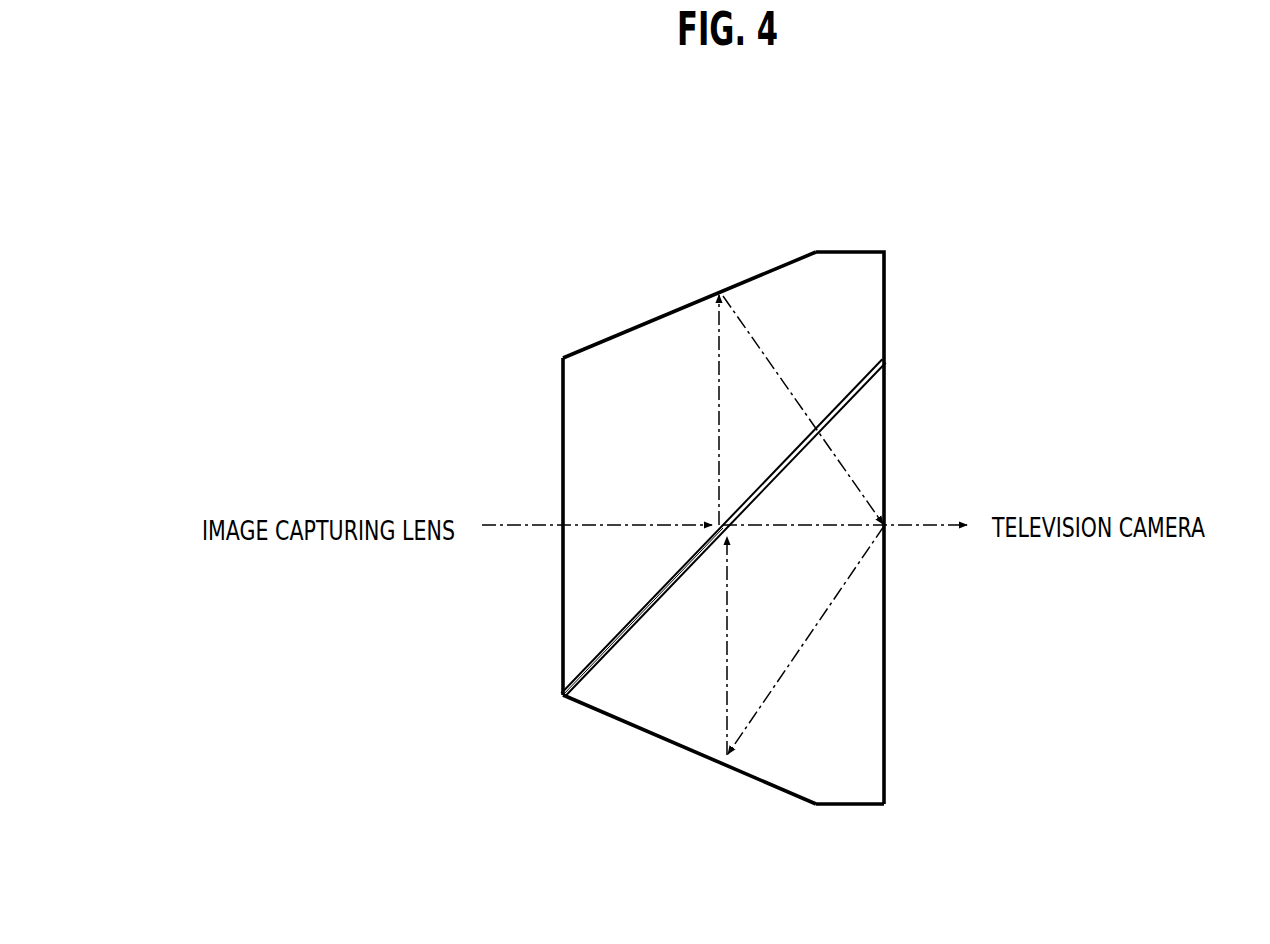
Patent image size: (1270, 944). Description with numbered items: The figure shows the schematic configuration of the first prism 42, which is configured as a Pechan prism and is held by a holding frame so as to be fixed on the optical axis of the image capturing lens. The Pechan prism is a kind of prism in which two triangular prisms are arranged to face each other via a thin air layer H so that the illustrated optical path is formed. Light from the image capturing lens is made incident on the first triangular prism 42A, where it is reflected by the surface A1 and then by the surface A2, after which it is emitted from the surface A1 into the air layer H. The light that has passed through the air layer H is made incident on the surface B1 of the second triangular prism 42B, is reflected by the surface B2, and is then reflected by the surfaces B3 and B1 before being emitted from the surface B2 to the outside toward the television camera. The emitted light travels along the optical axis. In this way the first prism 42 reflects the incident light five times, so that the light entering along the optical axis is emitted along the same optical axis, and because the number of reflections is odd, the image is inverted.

The first prism 42 is at (734, 529).
The first triangular prism 42A is at (723, 440).
The second triangular prism 42B is at (723, 616).
The air layer H is at (756, 525).
The surface A1 is at (603, 640).
The surface A2 is at (658, 322).
The surface B1 is at (693, 568).
The surface B2 is at (882, 731).
The surface B3 is at (673, 740).